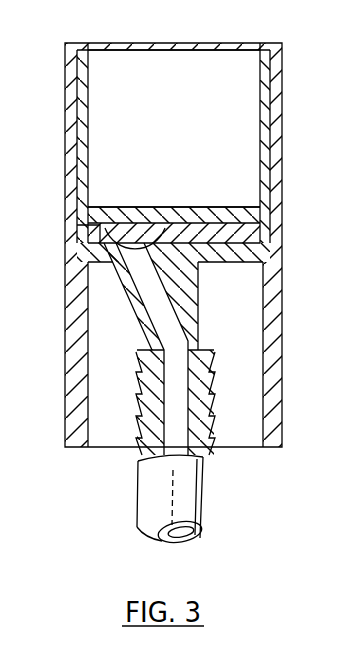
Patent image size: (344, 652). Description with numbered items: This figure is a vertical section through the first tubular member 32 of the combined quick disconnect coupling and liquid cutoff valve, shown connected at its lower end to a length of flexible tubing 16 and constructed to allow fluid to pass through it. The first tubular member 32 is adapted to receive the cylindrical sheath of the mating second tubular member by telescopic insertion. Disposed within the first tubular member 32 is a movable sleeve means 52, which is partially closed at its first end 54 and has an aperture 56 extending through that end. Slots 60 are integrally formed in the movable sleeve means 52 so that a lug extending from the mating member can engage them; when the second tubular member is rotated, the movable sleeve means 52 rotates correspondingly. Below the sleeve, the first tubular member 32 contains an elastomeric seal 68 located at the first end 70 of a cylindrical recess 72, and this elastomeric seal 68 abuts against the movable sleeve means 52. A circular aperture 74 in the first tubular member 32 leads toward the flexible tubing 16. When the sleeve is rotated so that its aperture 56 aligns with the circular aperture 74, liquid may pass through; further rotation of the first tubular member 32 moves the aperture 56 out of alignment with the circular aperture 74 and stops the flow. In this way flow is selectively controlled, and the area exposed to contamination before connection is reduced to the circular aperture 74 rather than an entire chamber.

The flexible tubing 16 is at (206, 474).
The first tubular member 32 is at (285, 299).
The movable sleeve means 52 is at (78, 121).
The first end 54 is at (82, 242).
The aperture 56 is at (262, 212).
The slots 60 is at (253, 97).
The elastomeric seal 68 is at (93, 264).
The first end 70 is at (268, 261).
The cylindrical recess 72 is at (266, 219).
The circular aperture 74 is at (106, 214).